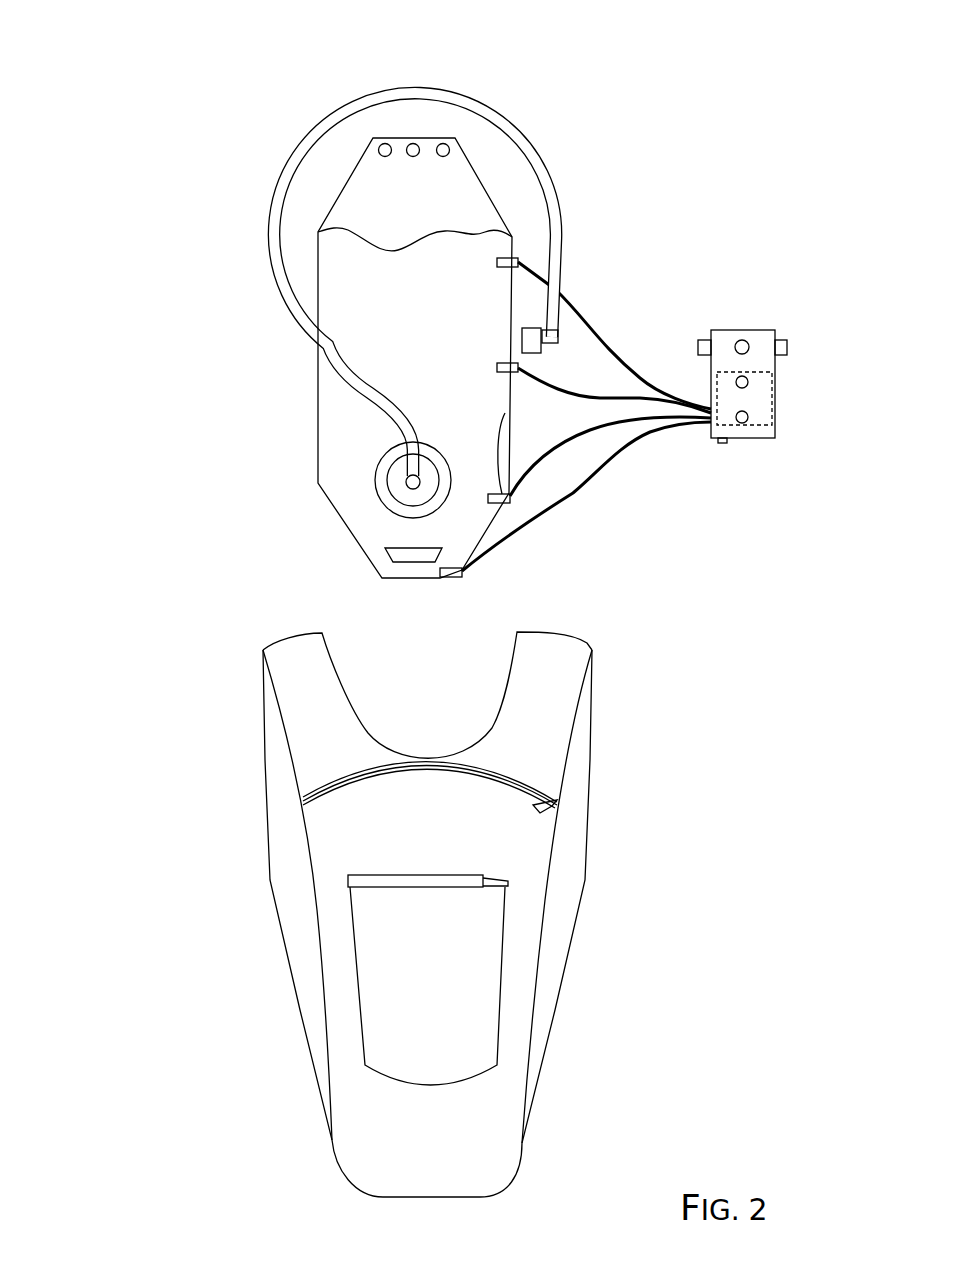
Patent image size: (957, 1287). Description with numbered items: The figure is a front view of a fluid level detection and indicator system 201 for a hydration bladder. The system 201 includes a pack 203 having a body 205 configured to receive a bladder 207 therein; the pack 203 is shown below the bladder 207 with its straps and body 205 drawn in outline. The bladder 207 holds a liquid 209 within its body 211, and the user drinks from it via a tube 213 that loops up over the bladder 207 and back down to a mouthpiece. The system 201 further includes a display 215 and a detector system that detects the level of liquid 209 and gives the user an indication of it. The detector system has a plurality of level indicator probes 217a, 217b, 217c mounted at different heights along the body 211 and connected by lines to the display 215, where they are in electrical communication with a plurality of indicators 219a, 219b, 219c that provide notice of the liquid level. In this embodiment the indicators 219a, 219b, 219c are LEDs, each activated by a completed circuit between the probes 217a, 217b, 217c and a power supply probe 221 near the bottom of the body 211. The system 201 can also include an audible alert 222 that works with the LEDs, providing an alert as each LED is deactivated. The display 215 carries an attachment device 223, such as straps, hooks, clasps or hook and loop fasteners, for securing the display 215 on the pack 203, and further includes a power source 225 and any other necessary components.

The fluid level detection and indicator system 201 is at (150, 47).
The pack 203 is at (509, 894).
The body 205 is at (532, 1028).
The bladder 207 is at (667, 60).
The liquid 209 is at (455, 231).
The body 211 is at (318, 448).
The tube 213 is at (274, 192).
The display 215 is at (741, 404).
The level indicator probe 217a is at (497, 262).
The level indicator probe 217b is at (497, 368).
The level indicator probe 217c is at (505, 418).
The indicator 219a is at (746, 342).
The indicator 219b is at (748, 382).
The indicator 219c is at (748, 417).
The power supply probe 221 is at (452, 577).
The audible alert 222 is at (723, 443).
The attachment device 223 is at (698, 345).
The power source 225 is at (743, 423).